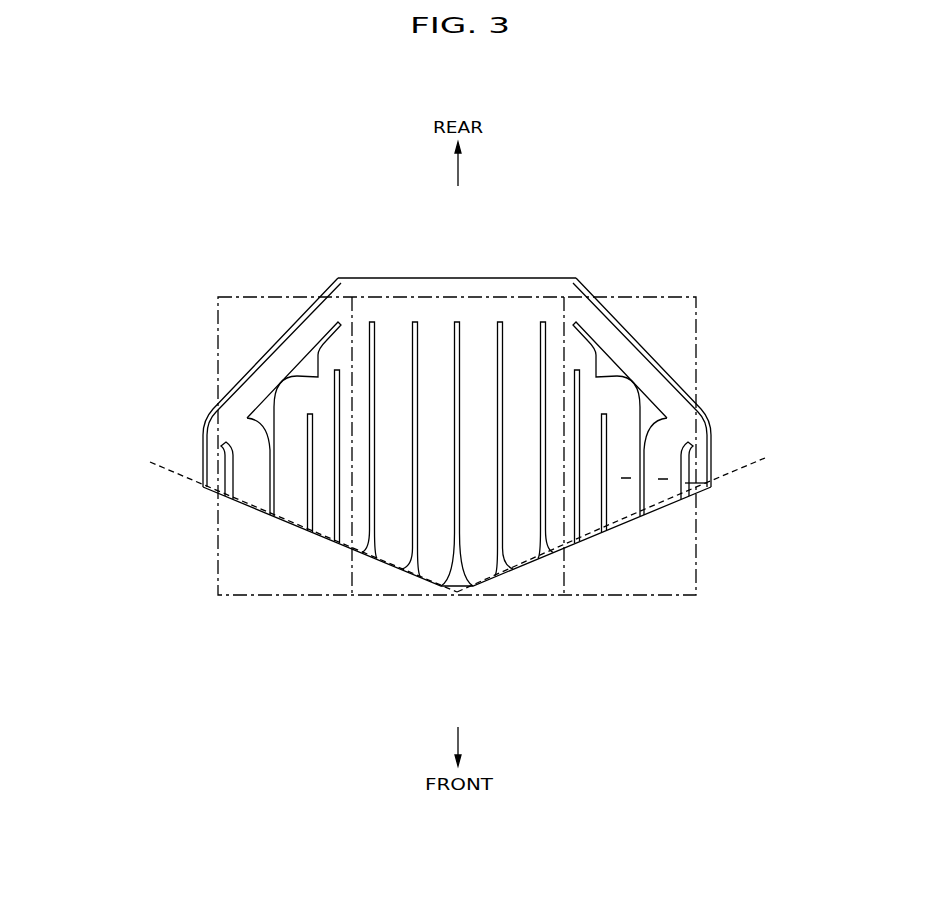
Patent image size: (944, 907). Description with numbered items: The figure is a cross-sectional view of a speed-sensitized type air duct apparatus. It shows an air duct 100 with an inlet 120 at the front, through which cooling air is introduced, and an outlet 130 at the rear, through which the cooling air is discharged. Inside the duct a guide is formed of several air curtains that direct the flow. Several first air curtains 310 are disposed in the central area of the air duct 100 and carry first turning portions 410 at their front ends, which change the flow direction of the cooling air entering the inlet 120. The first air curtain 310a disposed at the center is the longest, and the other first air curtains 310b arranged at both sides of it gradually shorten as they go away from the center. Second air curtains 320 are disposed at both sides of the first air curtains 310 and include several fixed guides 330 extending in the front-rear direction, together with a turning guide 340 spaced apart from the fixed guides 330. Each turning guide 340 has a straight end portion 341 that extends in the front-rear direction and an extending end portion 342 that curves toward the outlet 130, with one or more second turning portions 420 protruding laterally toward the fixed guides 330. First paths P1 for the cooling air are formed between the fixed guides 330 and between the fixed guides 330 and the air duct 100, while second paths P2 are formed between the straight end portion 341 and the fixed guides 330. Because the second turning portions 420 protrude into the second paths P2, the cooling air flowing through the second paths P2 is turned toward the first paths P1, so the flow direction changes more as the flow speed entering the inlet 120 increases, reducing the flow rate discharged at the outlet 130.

The air duct 100 is at (454, 448).
The inlet 120 is at (480, 546).
The outlet 130 is at (553, 290).
The first air curtains 310 is at (464, 441).
The first air curtain disposed at the center 310a is at (456, 342).
The other first air curtains 310b is at (503, 505).
The second air curtains 320 is at (218, 560).
The fixed guides 330 is at (334, 492).
The turning guide 340 is at (199, 419).
The straight end portion 341 is at (270, 455).
The extending end portion 342 is at (297, 376).
The first turning portions 410 is at (423, 562).
The second turning portions 420 is at (606, 376).
The first paths P1 is at (701, 474).
The second paths P2 is at (663, 480).